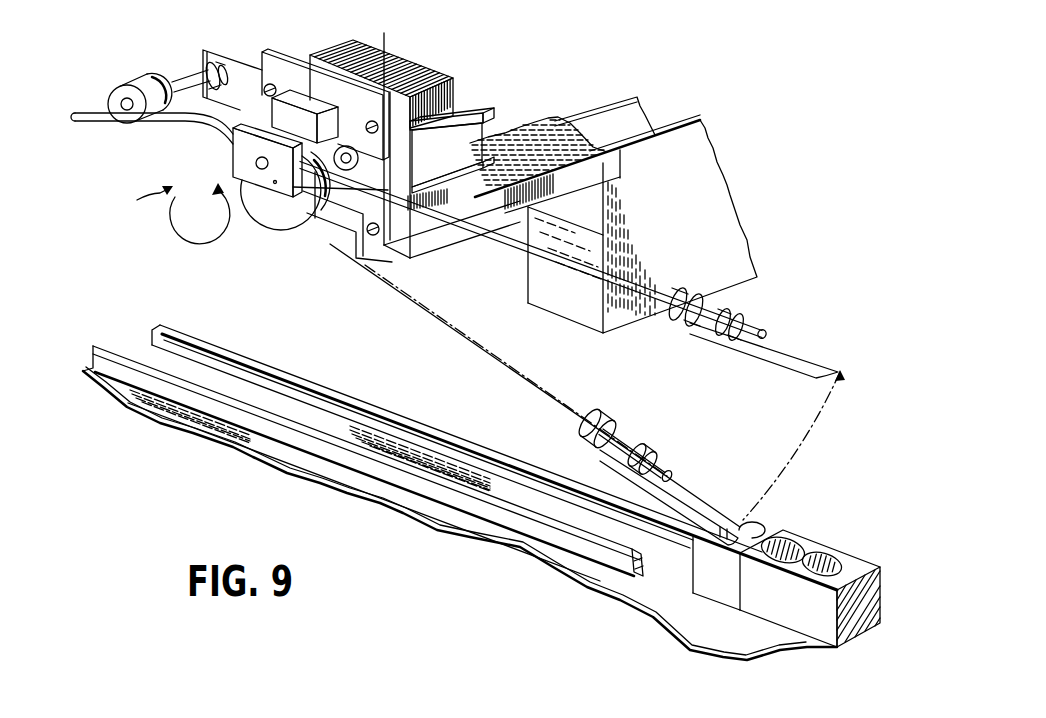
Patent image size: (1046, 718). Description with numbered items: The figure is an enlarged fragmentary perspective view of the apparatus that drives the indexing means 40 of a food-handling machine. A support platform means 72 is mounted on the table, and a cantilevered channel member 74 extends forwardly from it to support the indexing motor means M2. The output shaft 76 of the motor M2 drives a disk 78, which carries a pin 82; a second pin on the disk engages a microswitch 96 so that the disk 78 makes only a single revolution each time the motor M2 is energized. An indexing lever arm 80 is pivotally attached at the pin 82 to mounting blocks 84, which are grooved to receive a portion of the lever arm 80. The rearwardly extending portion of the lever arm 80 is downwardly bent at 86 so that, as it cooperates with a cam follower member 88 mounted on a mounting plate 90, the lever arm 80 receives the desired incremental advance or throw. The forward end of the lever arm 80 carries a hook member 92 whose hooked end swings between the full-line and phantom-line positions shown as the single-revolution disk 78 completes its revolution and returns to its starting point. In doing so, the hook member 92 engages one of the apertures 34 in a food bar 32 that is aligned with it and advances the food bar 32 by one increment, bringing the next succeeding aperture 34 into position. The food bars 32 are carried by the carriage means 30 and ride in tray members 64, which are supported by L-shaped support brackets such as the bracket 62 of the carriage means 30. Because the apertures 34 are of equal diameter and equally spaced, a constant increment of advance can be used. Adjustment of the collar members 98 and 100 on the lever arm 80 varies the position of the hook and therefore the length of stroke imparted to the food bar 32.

The carriage means 30 is at (333, 376).
The food bar 32 is at (700, 572).
The apertures 34 is at (795, 546).
The indexing means 40 is at (166, 213).
The L-shaped support bracket 62 is at (190, 332).
The tray members 64 is at (130, 350).
The support platform means 72 is at (708, 158).
The cantilevered channel member 74 is at (530, 128).
The output shaft 76 is at (358, 166).
The disk 78 is at (293, 228).
The indexing lever arm 80 is at (497, 240).
The pin (pivot) 82 is at (256, 163).
The mounting blocks 84 is at (275, 183).
The downwardly bent portion 86 is at (98, 121).
The cam follower member 88 is at (125, 84).
The mounting plate 90 is at (245, 72).
The hook member 92 is at (793, 353).
The microswitch 96 is at (288, 95).
The collar member 98 is at (683, 293).
The collar member 100 is at (740, 317).
The indexing motor means M2 is at (426, 57).